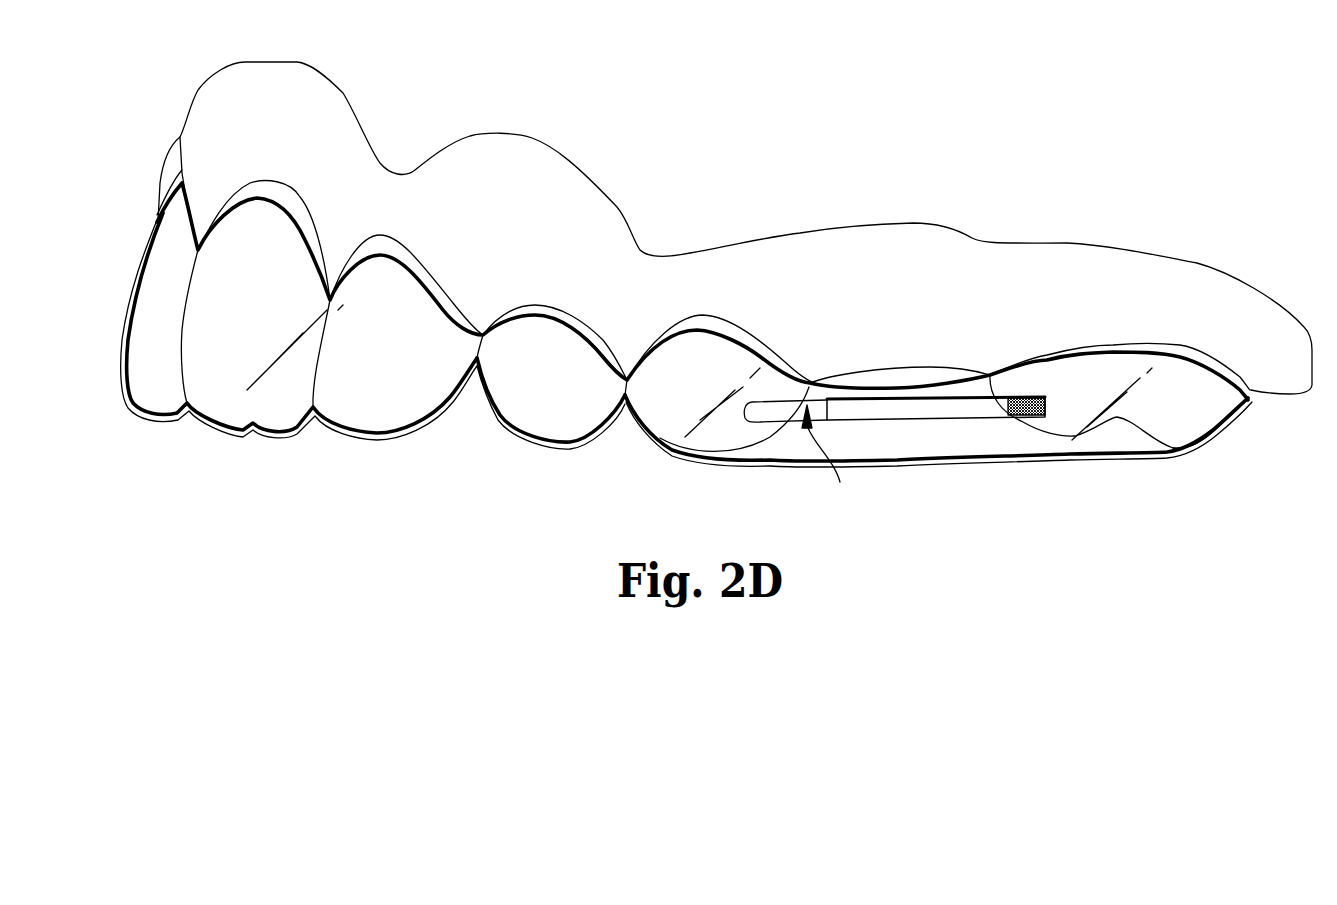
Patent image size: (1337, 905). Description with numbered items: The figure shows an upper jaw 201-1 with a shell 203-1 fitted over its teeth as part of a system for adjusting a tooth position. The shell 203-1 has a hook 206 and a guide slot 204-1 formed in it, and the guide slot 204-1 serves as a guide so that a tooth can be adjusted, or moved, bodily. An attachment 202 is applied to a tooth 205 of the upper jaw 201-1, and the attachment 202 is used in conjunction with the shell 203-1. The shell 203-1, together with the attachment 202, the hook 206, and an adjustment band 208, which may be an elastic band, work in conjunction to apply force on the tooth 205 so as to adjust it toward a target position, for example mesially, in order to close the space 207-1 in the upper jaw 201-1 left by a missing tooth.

The upper jaw 201-1 is at (1144, 250).
The shell 203-1 is at (530, 440).
The adjustment band 208 is at (915, 400).
The hook 206 is at (748, 422).
The space to be closed 207-1 is at (836, 459).
The guide slot 204-1 is at (880, 410).
The attachment 202 is at (1007, 418).
The tooth 205 is at (1202, 415).